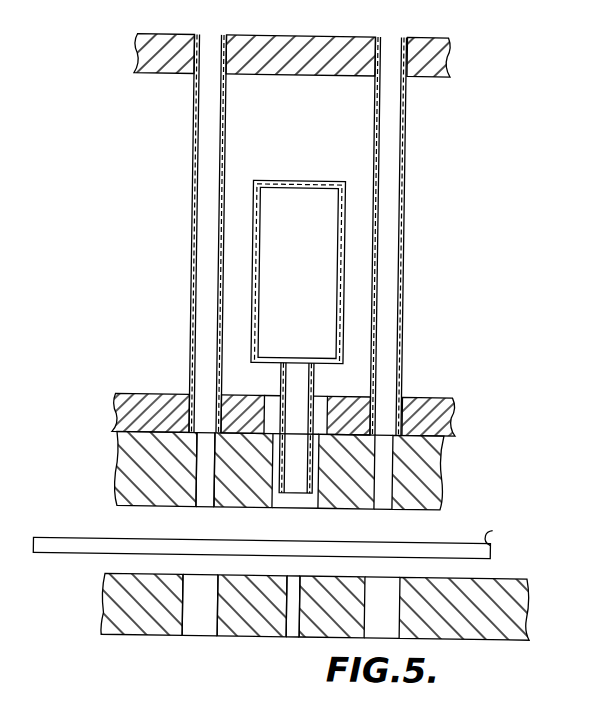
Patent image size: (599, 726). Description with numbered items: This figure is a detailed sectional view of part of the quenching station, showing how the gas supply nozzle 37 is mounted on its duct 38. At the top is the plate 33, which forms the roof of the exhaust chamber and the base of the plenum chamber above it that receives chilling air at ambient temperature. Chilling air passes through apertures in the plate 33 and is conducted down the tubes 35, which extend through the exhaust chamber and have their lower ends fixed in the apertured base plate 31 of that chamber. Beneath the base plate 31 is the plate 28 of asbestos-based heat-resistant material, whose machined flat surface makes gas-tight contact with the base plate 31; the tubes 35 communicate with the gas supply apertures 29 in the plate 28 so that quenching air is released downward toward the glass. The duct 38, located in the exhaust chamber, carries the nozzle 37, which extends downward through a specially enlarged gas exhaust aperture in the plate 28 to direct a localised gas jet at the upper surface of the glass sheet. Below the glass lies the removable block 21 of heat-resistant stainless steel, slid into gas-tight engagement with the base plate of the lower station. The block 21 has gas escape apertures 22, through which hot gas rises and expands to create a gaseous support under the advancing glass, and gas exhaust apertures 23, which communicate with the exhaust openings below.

The removable block 21 is at (502, 618).
The gas escape aperture 22 is at (298, 623).
The gas exhaust aperture 23 is at (212, 622).
The plate 28 is at (427, 495).
The gas supply aperture 29 is at (205, 488).
The apertured base plate 31 is at (446, 403).
The plate 33 is at (310, 46).
The tube 35 is at (402, 182).
The gas supply nozzle 37 is at (299, 418).
The duct 38 is at (295, 193).